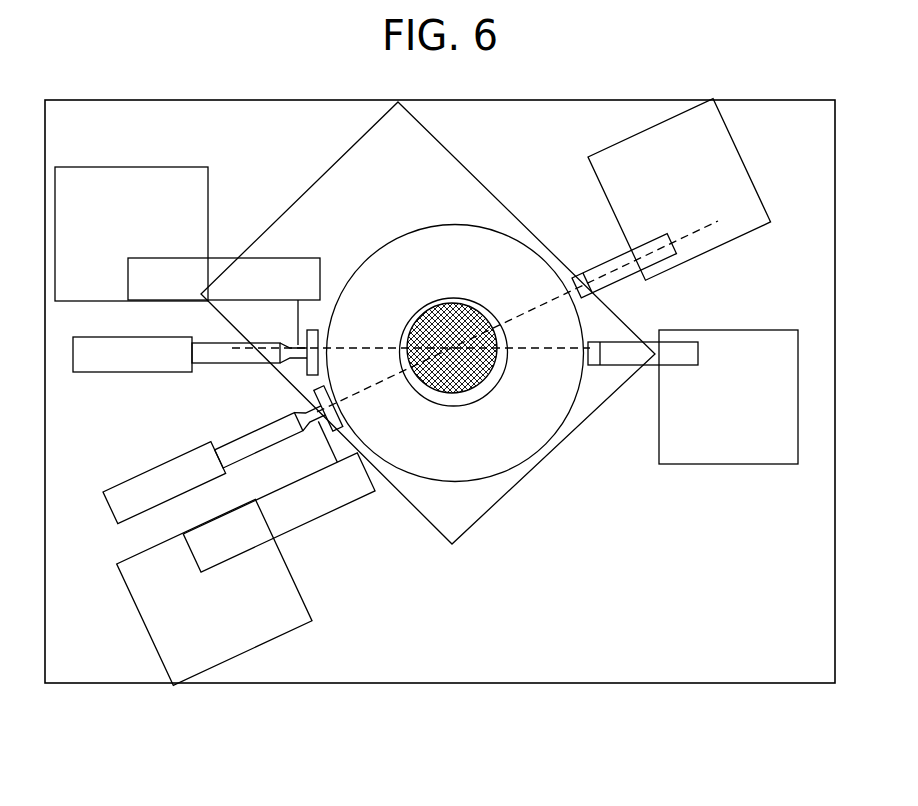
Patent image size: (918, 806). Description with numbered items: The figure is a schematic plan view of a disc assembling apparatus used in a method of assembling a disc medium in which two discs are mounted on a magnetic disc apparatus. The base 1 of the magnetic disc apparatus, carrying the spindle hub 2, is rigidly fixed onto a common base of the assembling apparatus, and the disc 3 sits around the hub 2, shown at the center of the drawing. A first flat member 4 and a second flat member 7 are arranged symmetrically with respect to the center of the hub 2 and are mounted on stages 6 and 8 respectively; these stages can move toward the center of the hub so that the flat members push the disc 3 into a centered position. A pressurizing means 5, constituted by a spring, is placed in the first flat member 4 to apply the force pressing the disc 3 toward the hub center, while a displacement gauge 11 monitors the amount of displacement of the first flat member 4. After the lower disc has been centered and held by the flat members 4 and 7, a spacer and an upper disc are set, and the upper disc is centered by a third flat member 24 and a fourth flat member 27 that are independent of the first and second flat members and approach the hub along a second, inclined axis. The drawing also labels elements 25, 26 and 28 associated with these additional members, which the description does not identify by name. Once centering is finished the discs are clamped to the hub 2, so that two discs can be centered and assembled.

The base 1 is at (433, 162).
The spindle hub 2 is at (485, 383).
The disc 3 is at (475, 428).
The first flat member 4 is at (307, 367).
The pressurizing means 5 is at (131, 206).
The stage 6 is at (162, 183).
The second flat member 7 is at (592, 352).
The stage 8 is at (732, 450).
The displacement gauge 11 is at (165, 358).
The third flat member 24 is at (303, 395).
The second light source 25 is at (254, 592).
The second light source unit 26 is at (283, 617).
The fourth flat member 27 is at (580, 283).
The second detector 28 is at (727, 150).